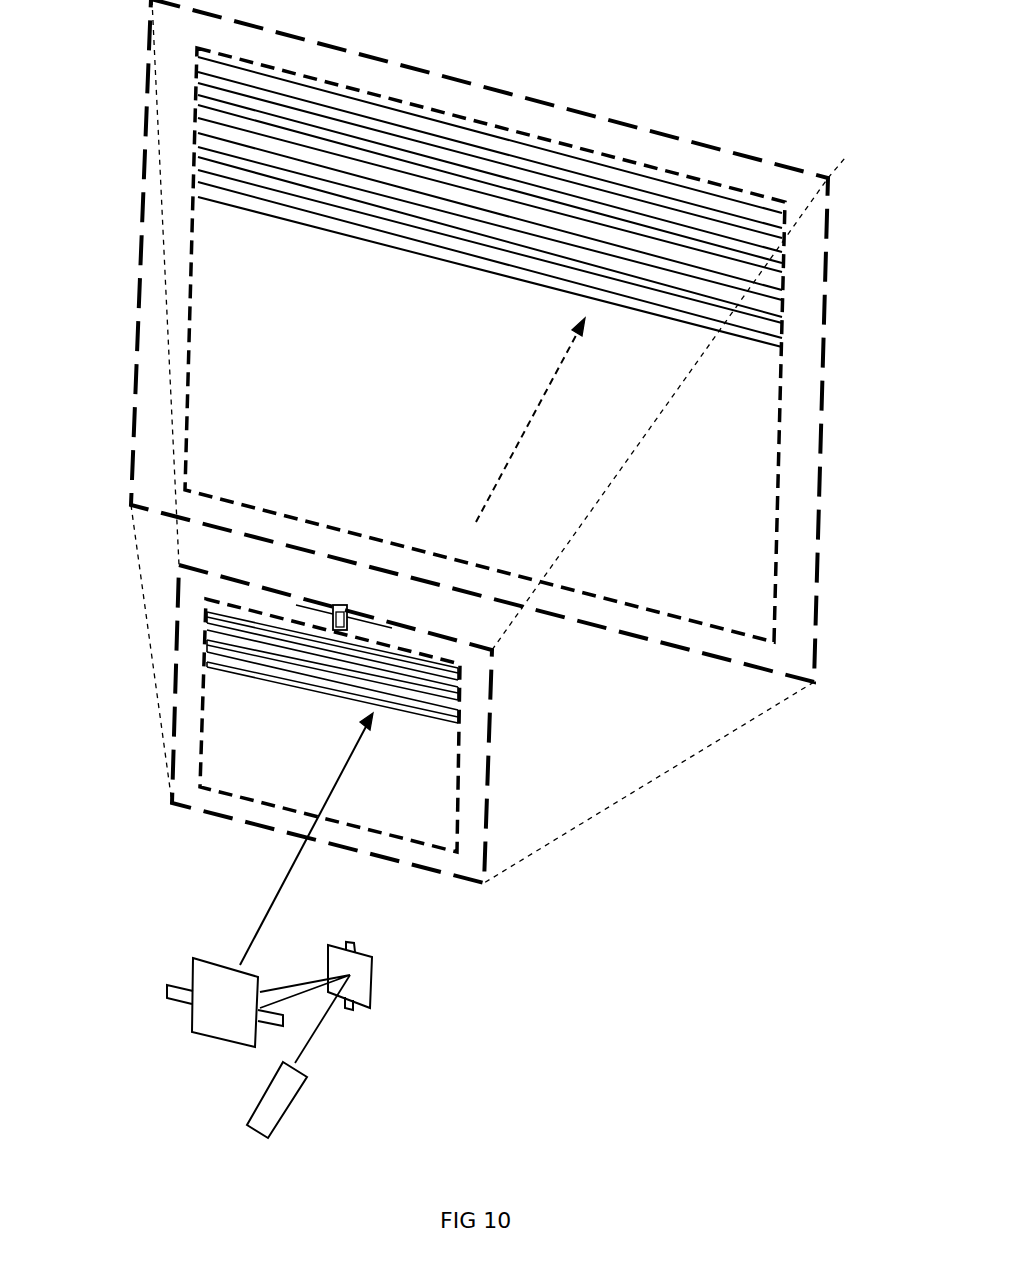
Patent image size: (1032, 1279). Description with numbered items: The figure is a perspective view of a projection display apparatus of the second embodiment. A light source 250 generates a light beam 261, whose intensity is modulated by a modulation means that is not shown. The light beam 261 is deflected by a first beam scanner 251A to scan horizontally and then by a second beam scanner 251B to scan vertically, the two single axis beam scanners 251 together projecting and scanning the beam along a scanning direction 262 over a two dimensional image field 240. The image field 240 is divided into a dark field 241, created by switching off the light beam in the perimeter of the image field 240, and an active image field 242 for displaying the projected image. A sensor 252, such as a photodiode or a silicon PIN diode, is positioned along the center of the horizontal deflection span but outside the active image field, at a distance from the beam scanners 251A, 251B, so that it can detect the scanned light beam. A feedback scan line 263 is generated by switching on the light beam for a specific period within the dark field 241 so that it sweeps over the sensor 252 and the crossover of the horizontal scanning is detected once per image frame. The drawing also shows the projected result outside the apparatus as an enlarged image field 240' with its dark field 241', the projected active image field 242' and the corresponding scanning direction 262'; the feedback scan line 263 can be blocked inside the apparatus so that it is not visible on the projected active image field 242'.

The image field (enlarged view) 240' is at (521, 341).
The dark field (enlarged view) 241' is at (548, 345).
The projected active image field 242' is at (552, 298).
The scanning direction (enlarged view) 262' is at (491, 420).
The image field 240 is at (368, 724).
The dark field 241 is at (382, 725).
The active image field 242 is at (385, 719).
The sensor 252 is at (338, 603).
The feedback scan line 263 is at (362, 622).
The scanning direction 262 is at (276, 839).
The beam scanners 251 is at (268, 1020).
The first beam scanner 251A is at (385, 965).
The second beam scanner 251B is at (187, 1037).
The light beam 261 is at (315, 1048).
The light source 250 is at (288, 1107).